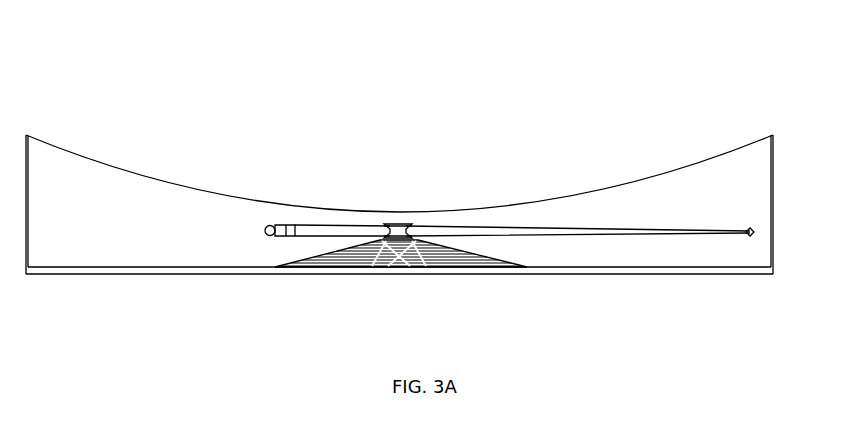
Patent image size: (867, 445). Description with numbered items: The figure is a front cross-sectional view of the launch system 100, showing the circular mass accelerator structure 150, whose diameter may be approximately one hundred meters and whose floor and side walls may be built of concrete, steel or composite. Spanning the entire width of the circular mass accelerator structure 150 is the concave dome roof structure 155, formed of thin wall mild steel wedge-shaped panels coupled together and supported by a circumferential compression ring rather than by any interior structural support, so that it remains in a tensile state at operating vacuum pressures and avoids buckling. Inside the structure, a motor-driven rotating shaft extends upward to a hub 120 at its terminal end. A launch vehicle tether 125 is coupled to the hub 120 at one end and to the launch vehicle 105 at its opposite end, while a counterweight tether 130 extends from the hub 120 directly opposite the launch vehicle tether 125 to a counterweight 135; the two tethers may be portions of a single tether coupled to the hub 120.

The launch system 100 is at (399, 198).
The launch vehicle 105 is at (749, 230).
The hub 120 is at (396, 224).
The launch vehicle tether 125 is at (582, 230).
The counterweight tether 130 is at (316, 231).
The counterweight 135 is at (263, 229).
The circular mass accelerator structure 150 is at (132, 296).
The roof structure 155 is at (104, 153).